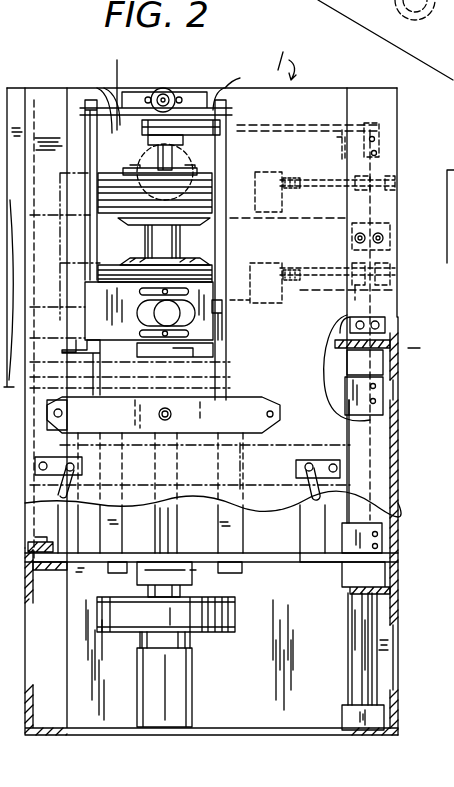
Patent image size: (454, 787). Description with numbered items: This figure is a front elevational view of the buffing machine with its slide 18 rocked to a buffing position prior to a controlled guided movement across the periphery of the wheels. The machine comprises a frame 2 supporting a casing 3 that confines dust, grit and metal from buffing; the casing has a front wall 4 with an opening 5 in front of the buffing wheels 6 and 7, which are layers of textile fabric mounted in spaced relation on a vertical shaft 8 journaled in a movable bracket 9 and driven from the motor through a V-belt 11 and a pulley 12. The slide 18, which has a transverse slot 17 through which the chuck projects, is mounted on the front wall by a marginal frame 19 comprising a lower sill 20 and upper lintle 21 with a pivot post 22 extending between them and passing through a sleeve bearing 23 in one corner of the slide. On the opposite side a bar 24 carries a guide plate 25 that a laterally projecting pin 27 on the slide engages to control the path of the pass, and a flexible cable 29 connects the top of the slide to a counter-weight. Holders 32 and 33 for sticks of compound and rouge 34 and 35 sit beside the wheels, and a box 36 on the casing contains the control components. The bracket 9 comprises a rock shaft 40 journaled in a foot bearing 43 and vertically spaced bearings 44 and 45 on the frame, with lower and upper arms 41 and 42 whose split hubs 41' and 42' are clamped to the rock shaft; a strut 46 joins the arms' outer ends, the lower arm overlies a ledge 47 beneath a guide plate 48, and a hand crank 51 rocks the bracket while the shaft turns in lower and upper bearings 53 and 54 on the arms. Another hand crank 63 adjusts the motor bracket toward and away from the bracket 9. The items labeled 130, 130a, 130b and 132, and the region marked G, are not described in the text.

The frame 2 is at (23, 591).
The casing 3 is at (419, 339).
The front wall 4 is at (47, 97).
The opening 5 is at (110, 130).
The buffing wheel 6 is at (100, 266).
The buffing wheel 7 is at (112, 213).
The shaft 8 is at (163, 527).
The movable bracket 9 is at (338, 360).
The V-belt 11 is at (228, 614).
The pulley 12 is at (400, 12).
The transverse slot 17 is at (185, 318).
The slide 18 is at (92, 318).
The marginal frame 19 is at (247, 140).
The lower sill 20 is at (251, 441).
The upper lintle 21 is at (222, 87).
The pivot post 22 is at (92, 154).
The sleeve bearing 23 is at (95, 356).
The bar 24 is at (232, 361).
The guide plate 25 is at (237, 240).
The pin 27 is at (224, 311).
The flexible cable 29 is at (118, 72).
The holder 32 is at (382, 290).
The holder 33 is at (310, 235).
The stick of abrasive compound and/or rouge 34 is at (256, 283).
The stick of abrasive compound and/or rouge 35 is at (270, 192).
The box 36 is at (15, 90).
The rock shaft 40 is at (355, 653).
The lower arm 41 is at (317, 576).
The split hub 41' is at (336, 538).
The upper arm 42 is at (390, 368).
The split hub 42' is at (328, 418).
The foot bearing 43 is at (375, 717).
The bearing 44 is at (385, 576).
The bearing 45 is at (388, 354).
The strut 46 is at (62, 535).
The ledge 47 is at (60, 575).
The guide plate 48 is at (30, 548).
The hand crank 51 is at (67, 482).
The lower bearing 53 is at (194, 584).
The upper bearing 54 is at (186, 403).
The hand crank 63 is at (307, 500).
The label 130 is at (443, 101).
The label 130a is at (453, 128).
The label 130b is at (433, 155).
The bracket 132 is at (449, 205).
The gap G is at (453, 340).